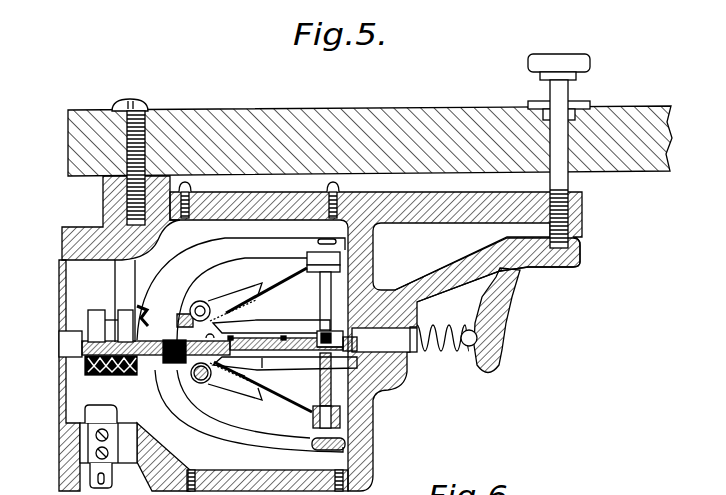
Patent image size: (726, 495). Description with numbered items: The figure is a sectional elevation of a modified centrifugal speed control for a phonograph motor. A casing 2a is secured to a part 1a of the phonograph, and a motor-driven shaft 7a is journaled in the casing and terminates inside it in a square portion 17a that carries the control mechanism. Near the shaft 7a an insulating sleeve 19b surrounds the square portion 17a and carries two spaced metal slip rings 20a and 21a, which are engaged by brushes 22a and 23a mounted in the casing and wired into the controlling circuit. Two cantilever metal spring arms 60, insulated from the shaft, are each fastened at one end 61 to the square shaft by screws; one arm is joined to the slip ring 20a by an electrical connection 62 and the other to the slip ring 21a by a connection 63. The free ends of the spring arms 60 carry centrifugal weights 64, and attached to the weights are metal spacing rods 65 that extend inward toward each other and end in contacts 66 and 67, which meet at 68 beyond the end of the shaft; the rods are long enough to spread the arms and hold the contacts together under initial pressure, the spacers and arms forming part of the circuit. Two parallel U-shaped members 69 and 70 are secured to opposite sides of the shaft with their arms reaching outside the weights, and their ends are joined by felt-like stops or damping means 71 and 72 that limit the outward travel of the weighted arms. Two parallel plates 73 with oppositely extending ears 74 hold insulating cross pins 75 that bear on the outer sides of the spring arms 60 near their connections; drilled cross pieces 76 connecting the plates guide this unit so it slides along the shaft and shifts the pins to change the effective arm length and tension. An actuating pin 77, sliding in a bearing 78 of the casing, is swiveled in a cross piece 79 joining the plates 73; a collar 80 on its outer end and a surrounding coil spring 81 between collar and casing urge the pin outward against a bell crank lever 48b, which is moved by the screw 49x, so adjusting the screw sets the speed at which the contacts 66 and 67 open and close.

The part of a phonograph 1a is at (369, 124).
The screw 49x is at (569, 187).
The casing 2a is at (374, 434).
The brush 22a is at (138, 263).
The insulating sleeve 19b is at (63, 370).
The bell crank lever 48b is at (492, 340).
The collar 80 is at (503, 316).
The U-shaped member 69 is at (231, 252).
The stop or damping means 71 is at (325, 239).
The U-shaped member 70 is at (210, 432).
The connection end of spring arm 61 is at (168, 388).
The centrifugal weight 64 is at (342, 261).
The spacing rod 65 is at (320, 297).
The stop or damping means 72 is at (348, 448).
The spring arm 60 is at (284, 280).
The plate 73 is at (248, 327).
The cross pin 75 is at (201, 301).
The ear 74 is at (218, 307).
The square portion of shaft 17a is at (238, 380).
The drilled cross piece 76 is at (272, 358).
The shaft 7a is at (60, 343).
The electrical connection 62 is at (150, 366).
The slip ring 20a is at (95, 318).
The slip ring 21a is at (124, 318).
The electrical connection 63 is at (145, 305).
The brush 23a is at (100, 418).
The actuating pin 77 is at (388, 340).
The bearing 78 is at (420, 356).
The coil spring 81 is at (471, 350).
The contact 66 is at (326, 333).
The point of engagement of contacts 68 is at (340, 336).
The contact 67 is at (320, 352).
The cross piece 79 is at (349, 352).